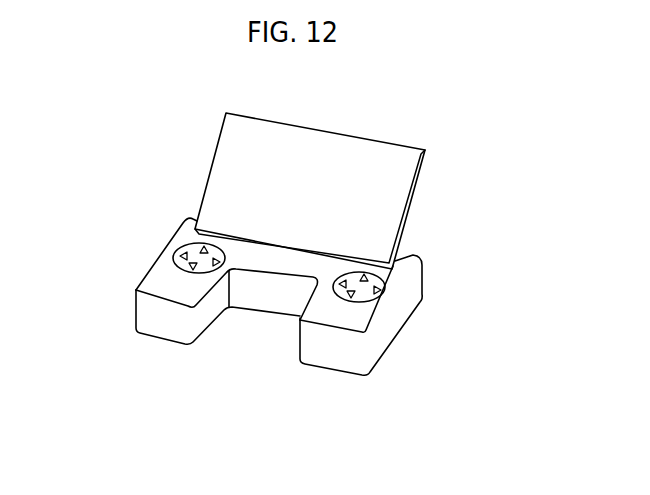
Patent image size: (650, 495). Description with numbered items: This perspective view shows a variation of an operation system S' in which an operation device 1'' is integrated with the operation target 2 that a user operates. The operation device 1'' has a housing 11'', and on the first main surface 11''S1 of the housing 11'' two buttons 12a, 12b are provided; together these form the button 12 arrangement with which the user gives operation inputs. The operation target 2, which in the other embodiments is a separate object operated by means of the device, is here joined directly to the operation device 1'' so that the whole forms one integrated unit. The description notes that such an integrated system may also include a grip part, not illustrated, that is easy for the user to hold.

The operation system S' is at (281, 264).
The operation target 2 is at (329, 129).
The operation device 1'' is at (295, 320).
The housing 11'' is at (209, 266).
The first main surface 11''S1 is at (395, 322).
The button 12 is at (265, 405).
The button 12a is at (182, 272).
The button 12b is at (345, 297).